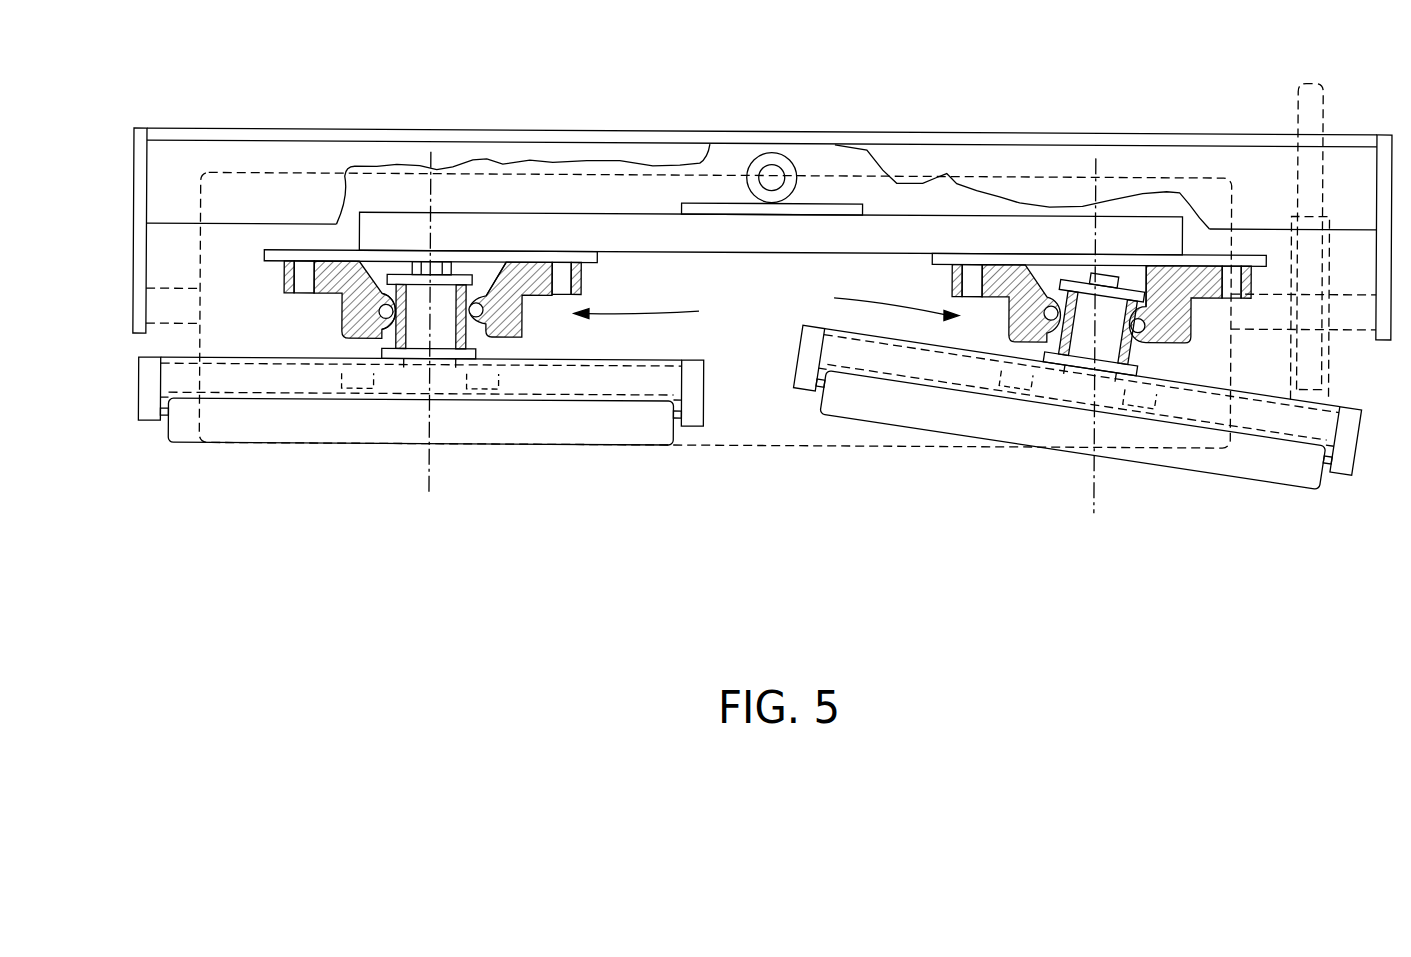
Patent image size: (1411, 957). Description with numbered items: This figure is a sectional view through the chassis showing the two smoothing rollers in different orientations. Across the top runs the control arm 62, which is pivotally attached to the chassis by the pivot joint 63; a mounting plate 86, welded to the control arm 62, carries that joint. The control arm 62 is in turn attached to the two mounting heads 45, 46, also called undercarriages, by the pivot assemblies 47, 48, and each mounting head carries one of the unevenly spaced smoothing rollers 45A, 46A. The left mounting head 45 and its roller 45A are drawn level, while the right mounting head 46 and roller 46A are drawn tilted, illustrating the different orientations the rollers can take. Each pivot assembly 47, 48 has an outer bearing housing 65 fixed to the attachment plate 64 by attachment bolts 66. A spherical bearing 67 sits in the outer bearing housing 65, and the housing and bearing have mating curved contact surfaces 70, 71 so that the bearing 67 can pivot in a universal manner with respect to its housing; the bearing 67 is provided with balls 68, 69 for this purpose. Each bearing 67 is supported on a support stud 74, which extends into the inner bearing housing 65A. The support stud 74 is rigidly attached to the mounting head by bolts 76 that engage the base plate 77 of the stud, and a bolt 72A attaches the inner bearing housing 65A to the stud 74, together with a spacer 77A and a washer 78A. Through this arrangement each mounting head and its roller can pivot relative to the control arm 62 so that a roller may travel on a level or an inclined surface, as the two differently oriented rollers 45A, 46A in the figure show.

The mounting head 45 is at (152, 405).
The smoothing roller 45A is at (228, 420).
The mounting head 46 is at (805, 354).
The smoothing roller 46A is at (1038, 423).
The pivot assembly 47 is at (655, 313).
The pivot assembly 48 is at (874, 301).
The control arm 62 is at (503, 228).
The pivot joint 63 is at (770, 150).
The attachment plate 64 is at (375, 257).
The outer bearing housing 65 is at (330, 287).
The inner bearing housing 65A is at (472, 336).
The attachment bolt 66 is at (565, 280).
The spherical bearing 67 is at (480, 322).
The ball 68 is at (395, 336).
The ball 69 is at (490, 288).
The curved contact surface 70 is at (379, 313).
The curved contact surface 71 is at (384, 297).
The bolt 72A is at (1113, 262).
The support stud 74 is at (445, 307).
The bolt 76 is at (360, 385).
The base plate 77 is at (417, 372).
The spacer 77A is at (445, 358).
The washer 78A is at (410, 276).
The mounting plate 86 is at (833, 200).